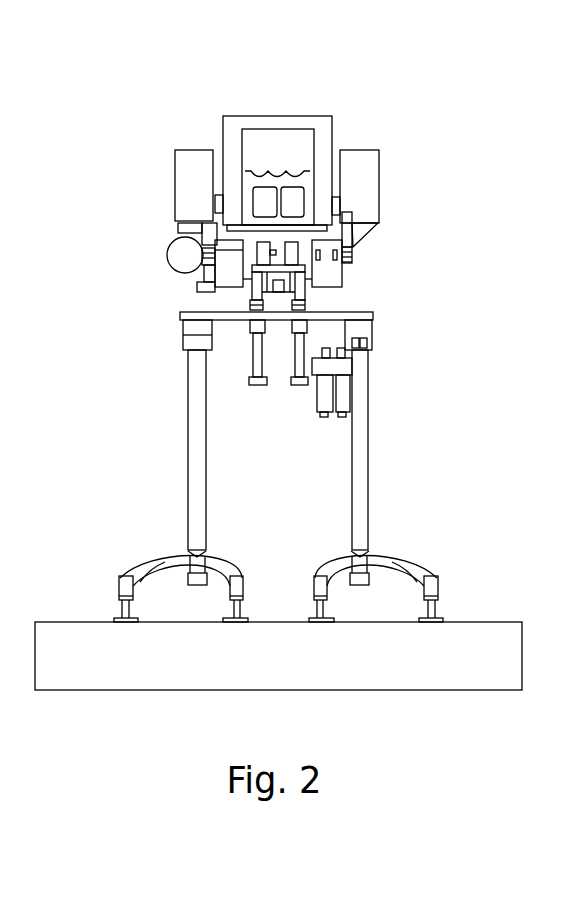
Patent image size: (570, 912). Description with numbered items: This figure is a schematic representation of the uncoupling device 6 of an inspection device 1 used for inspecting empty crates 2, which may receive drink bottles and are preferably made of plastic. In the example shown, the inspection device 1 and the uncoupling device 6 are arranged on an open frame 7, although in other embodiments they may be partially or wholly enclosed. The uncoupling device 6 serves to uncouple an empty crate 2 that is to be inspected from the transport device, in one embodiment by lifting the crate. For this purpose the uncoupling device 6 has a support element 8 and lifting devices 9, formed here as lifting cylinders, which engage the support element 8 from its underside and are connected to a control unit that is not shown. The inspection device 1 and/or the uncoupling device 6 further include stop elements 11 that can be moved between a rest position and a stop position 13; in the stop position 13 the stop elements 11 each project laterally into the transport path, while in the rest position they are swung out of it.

The inspection device 1 is at (307, 317).
The empty crate 2 is at (291, 122).
The uncoupling device 6 is at (329, 297).
The open frame 7 is at (362, 488).
The support element 8 is at (253, 253).
The lifting devices 9 is at (243, 362).
The stop elements 11 is at (227, 126).
The stop position 13 is at (235, 198).